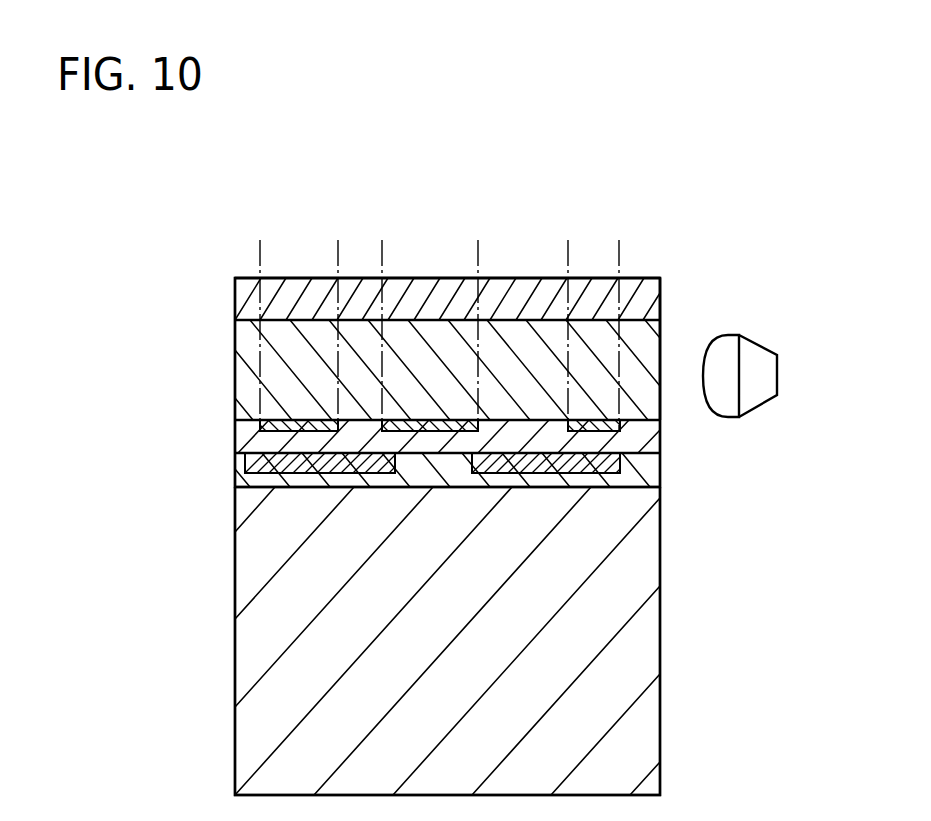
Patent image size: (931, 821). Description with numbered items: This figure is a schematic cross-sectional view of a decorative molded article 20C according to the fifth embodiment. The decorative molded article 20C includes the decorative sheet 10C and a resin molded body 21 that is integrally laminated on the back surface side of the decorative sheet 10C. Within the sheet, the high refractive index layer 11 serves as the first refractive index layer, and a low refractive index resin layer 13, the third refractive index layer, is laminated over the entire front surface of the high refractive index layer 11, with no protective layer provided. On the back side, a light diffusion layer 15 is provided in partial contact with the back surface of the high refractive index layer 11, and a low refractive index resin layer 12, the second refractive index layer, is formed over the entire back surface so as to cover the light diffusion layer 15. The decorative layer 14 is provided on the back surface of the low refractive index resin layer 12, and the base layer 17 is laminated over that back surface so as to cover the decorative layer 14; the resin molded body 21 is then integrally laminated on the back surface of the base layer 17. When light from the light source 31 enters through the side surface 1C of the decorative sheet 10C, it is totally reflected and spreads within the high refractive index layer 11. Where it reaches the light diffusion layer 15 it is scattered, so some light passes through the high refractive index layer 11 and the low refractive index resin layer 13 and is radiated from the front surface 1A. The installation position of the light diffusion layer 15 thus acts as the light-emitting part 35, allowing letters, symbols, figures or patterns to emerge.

The decorative molded article 20C is at (487, 171).
The decorative sheet 10C is at (218, 361).
The low refractive index resin layer 13 is at (656, 288).
The front surface 1A is at (522, 275).
The high refractive index layer 11 is at (653, 353).
The side surface 1C is at (666, 393).
The light source 31 is at (762, 361).
The light-emitting part 35 is at (336, 254).
The light diffusion layer 15 is at (260, 431).
The low refractive index resin layer 12 is at (652, 438).
The decorative layer 14 is at (262, 478).
The base layer 17 is at (651, 465).
The resin molded body 21 is at (650, 623).